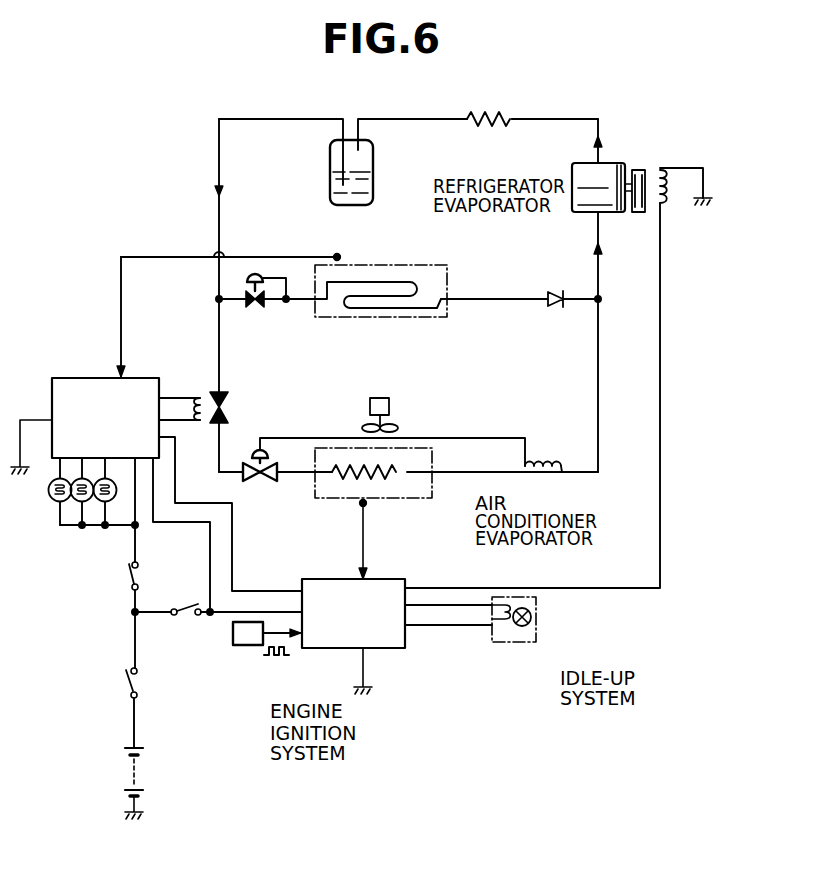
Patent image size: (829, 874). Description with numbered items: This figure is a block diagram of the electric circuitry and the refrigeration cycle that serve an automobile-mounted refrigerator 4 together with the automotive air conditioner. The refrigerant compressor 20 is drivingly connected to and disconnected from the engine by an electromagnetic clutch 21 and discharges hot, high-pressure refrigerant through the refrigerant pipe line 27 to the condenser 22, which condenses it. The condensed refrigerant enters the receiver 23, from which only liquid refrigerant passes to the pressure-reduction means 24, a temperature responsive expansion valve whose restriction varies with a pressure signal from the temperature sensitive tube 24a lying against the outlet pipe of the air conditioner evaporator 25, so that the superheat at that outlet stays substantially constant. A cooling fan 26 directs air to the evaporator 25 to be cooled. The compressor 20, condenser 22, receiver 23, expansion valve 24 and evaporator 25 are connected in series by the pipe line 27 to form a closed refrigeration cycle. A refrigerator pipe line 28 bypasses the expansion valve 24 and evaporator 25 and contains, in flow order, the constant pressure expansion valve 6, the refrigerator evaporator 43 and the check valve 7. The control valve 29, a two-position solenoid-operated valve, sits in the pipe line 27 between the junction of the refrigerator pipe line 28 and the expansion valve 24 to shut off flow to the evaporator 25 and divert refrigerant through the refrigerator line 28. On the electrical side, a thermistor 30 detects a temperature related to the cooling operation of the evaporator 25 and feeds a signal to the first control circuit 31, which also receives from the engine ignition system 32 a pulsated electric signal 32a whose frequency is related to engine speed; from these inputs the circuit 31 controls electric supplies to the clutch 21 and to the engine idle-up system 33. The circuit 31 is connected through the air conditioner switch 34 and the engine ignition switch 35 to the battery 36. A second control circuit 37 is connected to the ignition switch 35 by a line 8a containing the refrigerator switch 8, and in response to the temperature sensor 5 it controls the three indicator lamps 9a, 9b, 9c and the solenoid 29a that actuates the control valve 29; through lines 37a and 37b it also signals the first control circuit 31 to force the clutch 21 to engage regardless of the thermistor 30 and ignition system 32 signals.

The refrigerator 4 is at (452, 272).
The temperature sensor 5 is at (337, 257).
The constant pressure expansion valve 6 is at (257, 307).
The check valve 7 is at (553, 305).
The refrigerator switch 8 is at (128, 580).
The line 8a is at (137, 549).
The indicator lamp 9a is at (52, 503).
The indicator lamp 9b is at (80, 503).
The indicator lamp 9c is at (104, 503).
The refrigerant compressor 20 is at (612, 162).
The electromagnetic clutch 21 is at (650, 168).
The condenser 22 is at (495, 118).
The receiver 23 is at (330, 160).
The pressure-reduction means 24 is at (258, 480).
The temperature sensitive tube 24a is at (547, 455).
The air conditioner evaporator 25 is at (411, 498).
The cooling fan 26 is at (397, 424).
The refrigerant pipe line 27 is at (571, 118).
The refrigerator pipe line 28 is at (576, 296).
The control valve 29 is at (218, 389).
The solenoid 29a is at (200, 400).
The thermistor 30 is at (363, 503).
The first control circuit 31 is at (392, 648).
The engine ignition system 32 is at (240, 645).
The pulsated electric signal 32a is at (258, 651).
The engine idle-up system 33 is at (526, 642).
The air conditioner switch 34 is at (184, 617).
The engine ignition switch 35 is at (128, 690).
The battery 36 is at (128, 775).
The second control circuit 37 is at (82, 378).
The line 37a is at (232, 541).
The line 37b is at (210, 577).
The refrigerator evaporator 43 is at (395, 280).